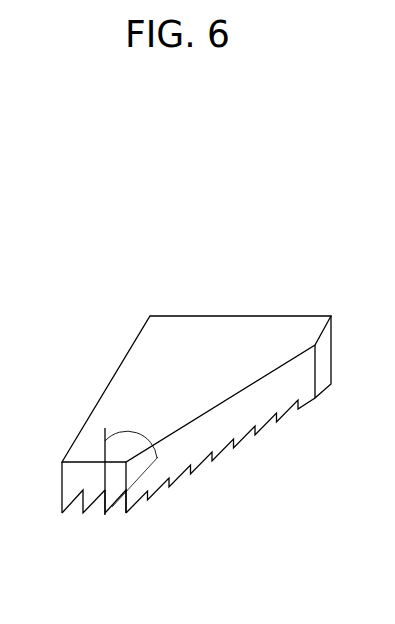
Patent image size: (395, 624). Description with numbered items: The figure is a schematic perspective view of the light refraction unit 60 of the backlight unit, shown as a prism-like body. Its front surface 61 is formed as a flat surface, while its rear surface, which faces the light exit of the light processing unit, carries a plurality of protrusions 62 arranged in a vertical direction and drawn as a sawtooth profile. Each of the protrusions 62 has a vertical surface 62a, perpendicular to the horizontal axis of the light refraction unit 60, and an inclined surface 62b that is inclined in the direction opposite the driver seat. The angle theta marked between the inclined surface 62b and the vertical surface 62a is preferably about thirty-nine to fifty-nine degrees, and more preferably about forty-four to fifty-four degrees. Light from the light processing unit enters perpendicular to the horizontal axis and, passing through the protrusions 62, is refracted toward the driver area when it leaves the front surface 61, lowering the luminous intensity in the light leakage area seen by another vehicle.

The light refraction unit 60 is at (187, 384).
The front surface 61 is at (140, 360).
The protrusions 62 is at (263, 423).
The vertical surface 62a is at (92, 505).
The inclined surface 62b is at (115, 507).